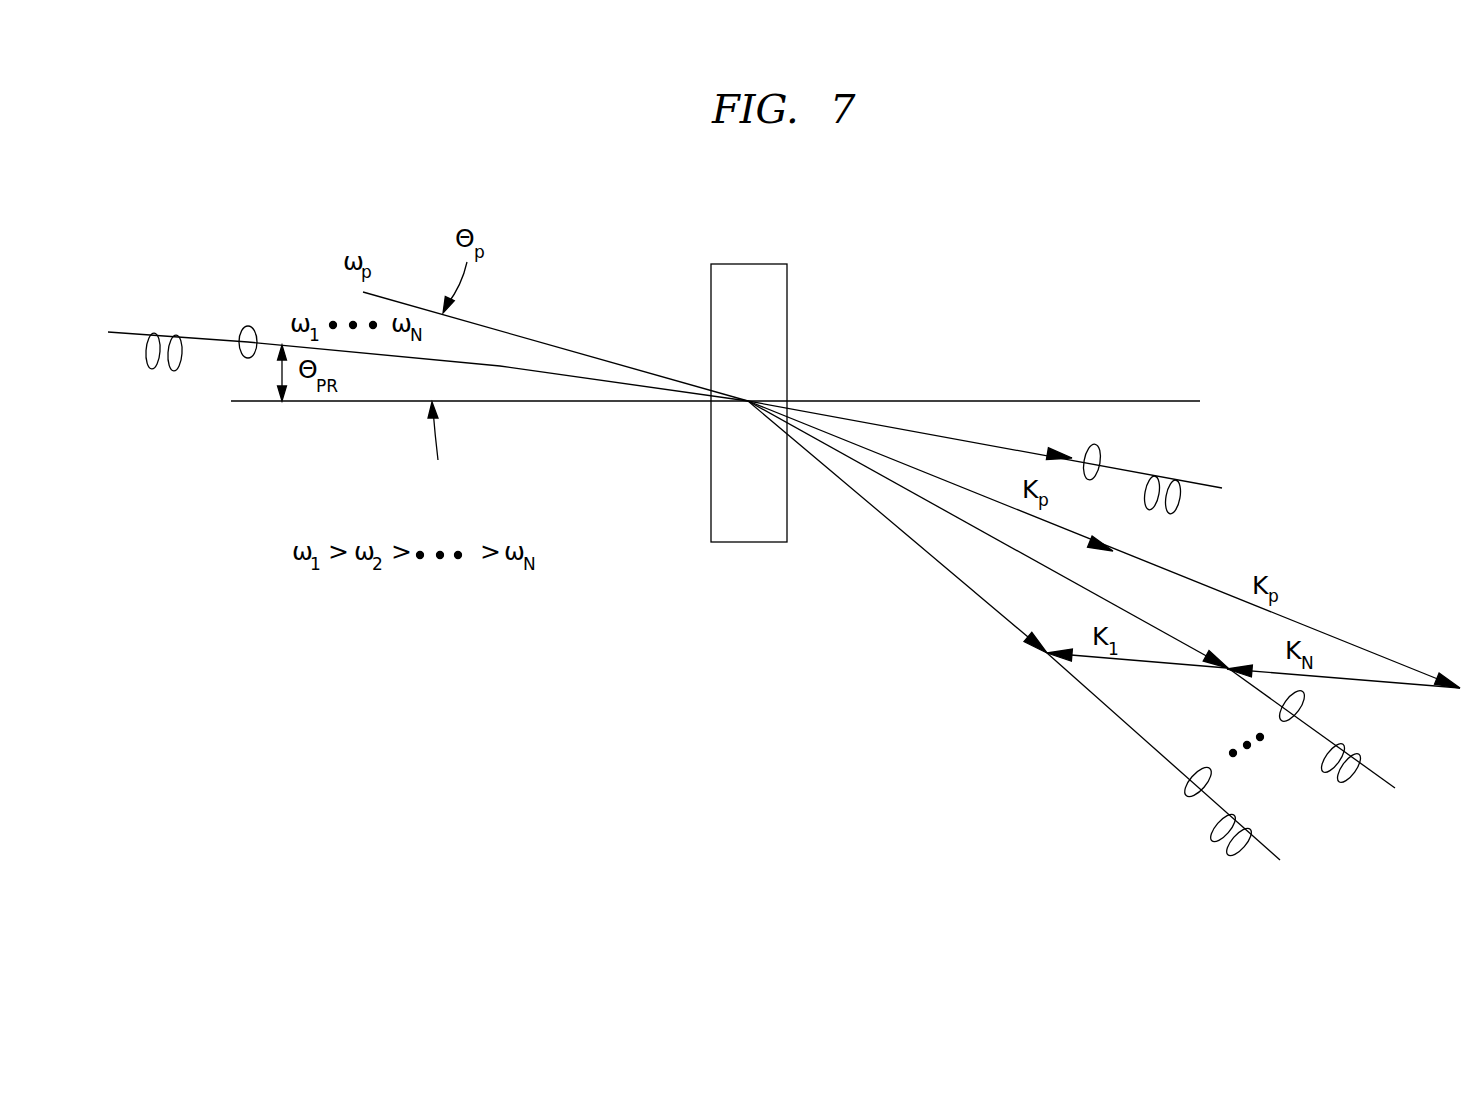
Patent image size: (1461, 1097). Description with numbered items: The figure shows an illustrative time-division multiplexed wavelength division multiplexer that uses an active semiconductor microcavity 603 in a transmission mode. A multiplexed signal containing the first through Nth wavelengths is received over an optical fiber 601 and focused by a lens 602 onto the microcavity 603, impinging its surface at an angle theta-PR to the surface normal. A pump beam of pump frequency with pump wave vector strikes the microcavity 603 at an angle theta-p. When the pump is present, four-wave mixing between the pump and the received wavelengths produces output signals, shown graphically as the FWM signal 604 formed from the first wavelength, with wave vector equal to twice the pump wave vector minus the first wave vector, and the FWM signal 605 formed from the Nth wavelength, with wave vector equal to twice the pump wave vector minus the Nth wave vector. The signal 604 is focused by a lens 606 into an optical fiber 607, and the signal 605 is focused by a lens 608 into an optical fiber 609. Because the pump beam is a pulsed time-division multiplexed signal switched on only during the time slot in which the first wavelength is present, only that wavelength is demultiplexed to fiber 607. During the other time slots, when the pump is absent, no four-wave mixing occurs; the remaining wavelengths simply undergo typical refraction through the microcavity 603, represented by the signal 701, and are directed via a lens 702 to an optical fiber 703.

The optical fiber 601 is at (123, 333).
The lens 602 is at (250, 326).
The microcavity 603 is at (748, 264).
The FWM signal ω1' 604 is at (960, 582).
The FWM signal ωN' 605 is at (1117, 607).
The lens 606 is at (1190, 795).
The optical fiber 607 is at (1267, 851).
The lens 608 is at (1303, 700).
The optical fiber 609 is at (1383, 775).
The refracted signal 701 is at (977, 438).
The lens 702 is at (1099, 445).
The optical fiber 703 is at (1208, 483).